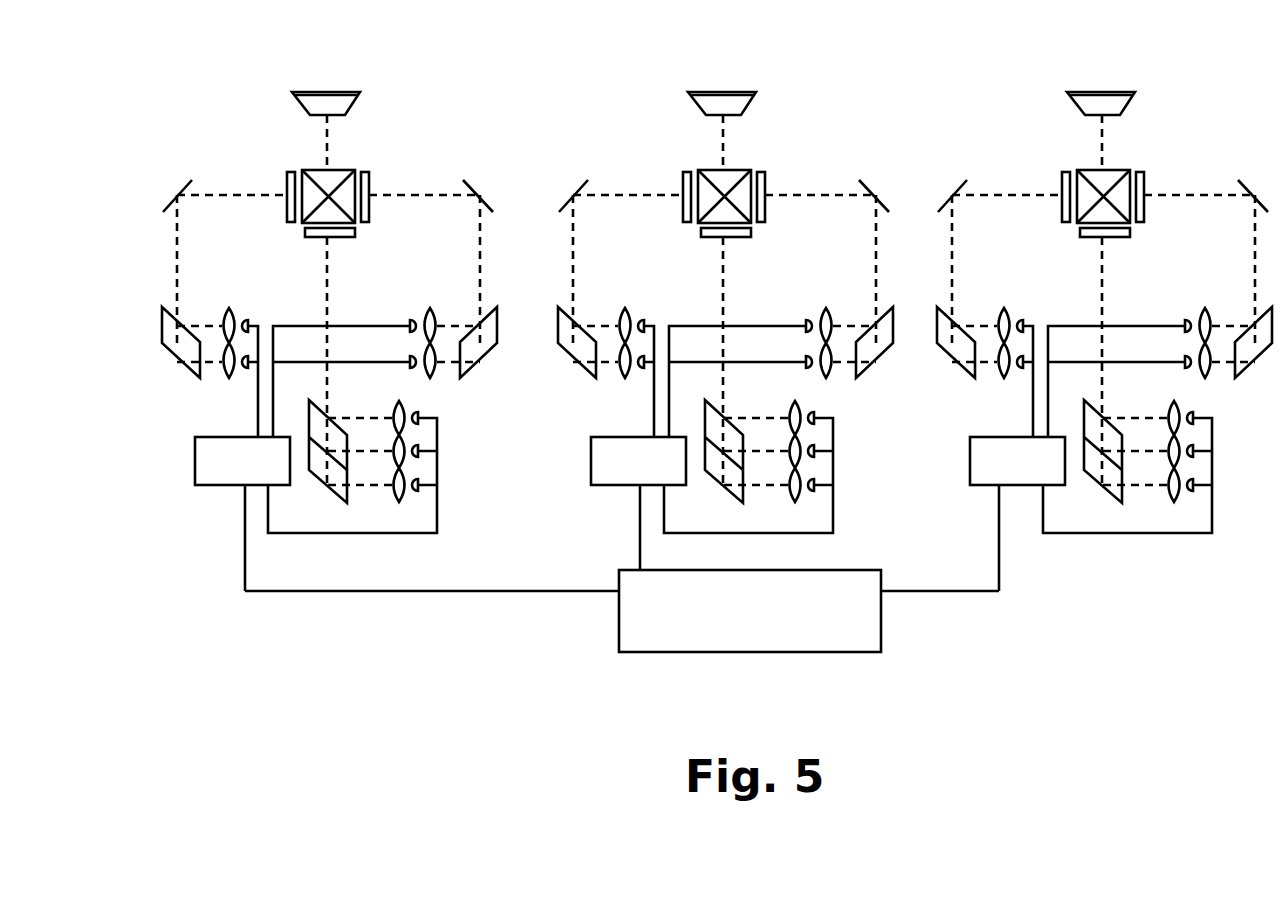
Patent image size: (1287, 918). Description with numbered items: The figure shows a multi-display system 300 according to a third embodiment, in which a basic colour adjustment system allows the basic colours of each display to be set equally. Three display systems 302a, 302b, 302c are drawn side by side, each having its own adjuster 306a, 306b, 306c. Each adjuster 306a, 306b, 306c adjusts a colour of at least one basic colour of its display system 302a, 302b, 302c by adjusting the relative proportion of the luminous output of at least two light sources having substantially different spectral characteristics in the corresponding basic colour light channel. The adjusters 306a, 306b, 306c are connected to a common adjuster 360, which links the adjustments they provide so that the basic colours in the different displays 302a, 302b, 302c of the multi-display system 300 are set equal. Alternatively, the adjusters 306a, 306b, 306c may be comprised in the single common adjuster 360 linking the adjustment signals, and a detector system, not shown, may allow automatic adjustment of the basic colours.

The multi-display system 300 is at (117, 92).
The display system 302a is at (421, 107).
The display system 302b is at (836, 107).
The display system 302c is at (1197, 107).
The adjuster 306a is at (223, 473).
The adjuster 306b is at (619, 473).
The adjuster 306c is at (998, 473).
The common adjuster 360 is at (639, 633).